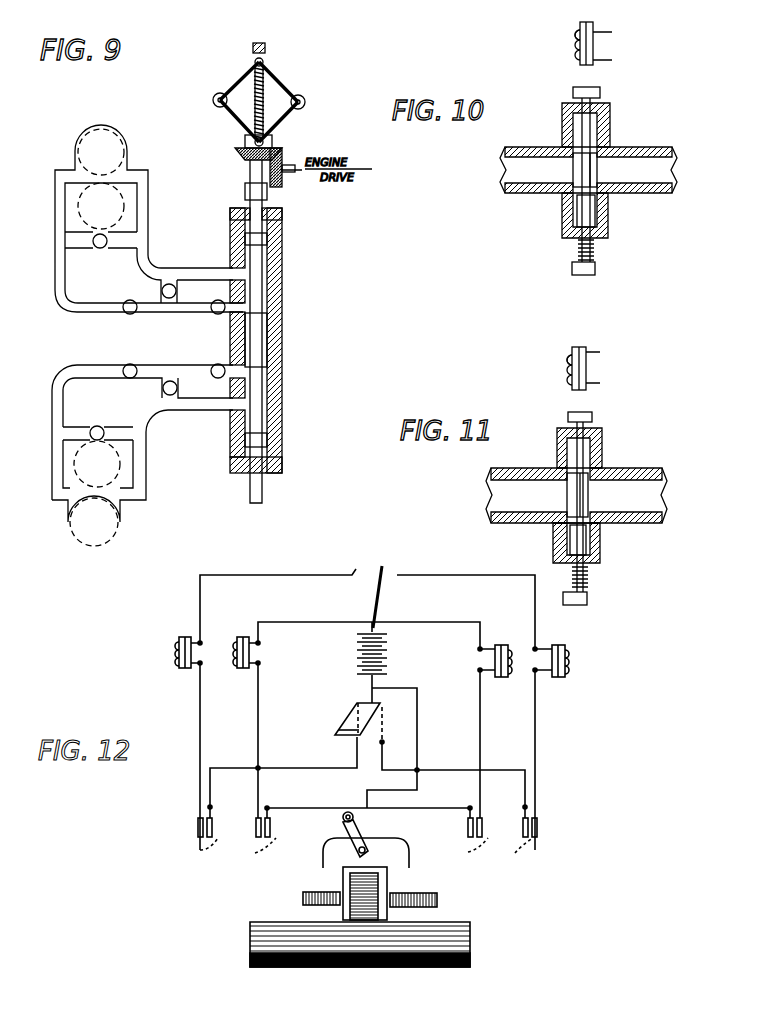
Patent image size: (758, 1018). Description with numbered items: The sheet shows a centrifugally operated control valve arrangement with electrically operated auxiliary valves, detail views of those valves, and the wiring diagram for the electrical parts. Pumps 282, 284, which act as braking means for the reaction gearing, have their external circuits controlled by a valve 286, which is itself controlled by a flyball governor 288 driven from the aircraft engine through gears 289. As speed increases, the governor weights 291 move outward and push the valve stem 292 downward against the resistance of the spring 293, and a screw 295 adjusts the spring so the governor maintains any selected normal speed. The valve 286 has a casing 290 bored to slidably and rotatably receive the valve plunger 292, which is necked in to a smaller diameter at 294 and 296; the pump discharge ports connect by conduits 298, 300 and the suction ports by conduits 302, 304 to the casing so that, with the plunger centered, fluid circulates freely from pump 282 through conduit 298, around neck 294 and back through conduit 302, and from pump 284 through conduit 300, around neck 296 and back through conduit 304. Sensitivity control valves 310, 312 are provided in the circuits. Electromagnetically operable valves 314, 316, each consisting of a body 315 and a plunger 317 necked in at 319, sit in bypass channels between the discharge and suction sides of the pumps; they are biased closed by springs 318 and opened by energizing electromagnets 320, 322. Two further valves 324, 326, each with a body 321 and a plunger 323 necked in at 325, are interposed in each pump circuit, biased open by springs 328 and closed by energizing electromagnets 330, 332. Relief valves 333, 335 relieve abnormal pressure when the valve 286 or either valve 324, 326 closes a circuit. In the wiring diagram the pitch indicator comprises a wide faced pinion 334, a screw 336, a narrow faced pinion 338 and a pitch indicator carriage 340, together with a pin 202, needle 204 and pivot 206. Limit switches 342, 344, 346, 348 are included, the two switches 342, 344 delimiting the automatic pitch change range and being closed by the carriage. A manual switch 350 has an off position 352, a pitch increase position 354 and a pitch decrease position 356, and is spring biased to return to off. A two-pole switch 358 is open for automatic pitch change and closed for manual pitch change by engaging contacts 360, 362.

In FIG. 12, the pin 202 is at (397, 841).
In FIG. 12, the needle 204 is at (351, 829).
In FIG. 12, the pivot 206 is at (355, 820).
In FIG. 9, the pump 282 is at (140, 159).
In FIG. 9, the pump 284 is at (139, 514).
In FIG. 9, the valve 286 is at (304, 331).
In FIG. 9, the flyball governor 288 is at (269, 117).
In FIG. 9, the gears 289 is at (282, 180).
In FIG. 9, the casing 290 is at (266, 358).
In FIG. 9, the governor weights 291 is at (226, 68).
In FIG. 9, the valve plunger 292 is at (266, 318).
In FIG. 9, the spring 293 is at (283, 110).
In FIG. 9, the necked in portion 294 is at (266, 283).
In FIG. 9, the screw 295 is at (267, 48).
In FIG. 9, the necked in portion 296 is at (266, 258).
In FIG. 9, the conduit 298 is at (70, 300).
In FIG. 9, the conduit 300 is at (66, 376).
In FIG. 9, the conduit 302 is at (150, 206).
In FIG. 9, the conduit 304 is at (146, 471).
In FIG. 9, the sensitivity control valve 310 is at (222, 314).
In FIG. 9, the sensitivity control valve 312 is at (218, 364).
In FIG. 9, the electromagnetically operable valve 314 is at (171, 283).
In FIG. 10, the electromagnetically operable valve 314 is at (590, 181).
In FIG. 10, the body 315 is at (610, 212).
In FIG. 9, the electromagnetically operable valve 316 is at (168, 396).
In FIG. 10, the electromagnetically operable valve 316 is at (590, 154).
In FIG. 10, the plunger 317 is at (578, 166).
In FIG. 10, the spring 318 is at (597, 255).
In FIG. 10, the necked in portion 319 is at (578, 200).
In FIG. 10, the electromagnet 320 is at (580, 42).
In FIG. 12, the electromagnet 320 is at (242, 640).
In FIG. 11, the body 321 is at (632, 470).
In FIG. 10, the electromagnet 322 is at (557, 45).
In FIG. 12, the electromagnet 322 is at (494, 678).
In FIG. 11, the plunger 323 is at (570, 538).
In FIG. 9, the electromagnetically operable valve 324 is at (126, 314).
In FIG. 11, the electromagnetically operable valve 324 is at (585, 508).
In FIG. 11, the necked in portion 325 is at (572, 502).
In FIG. 9, the electromagnetically operable valve 326 is at (150, 347).
In FIG. 11, the electromagnetically operable valve 326 is at (618, 544).
In FIG. 11, the spring 328 is at (582, 585).
In FIG. 11, the electromagnet 330 is at (588, 362).
In FIG. 12, the electromagnet 330 is at (182, 640).
In FIG. 11, the electromagnet 332 is at (619, 372).
In FIG. 12, the electromagnet 332 is at (560, 678).
In FIG. 9, the relief valve 333 is at (96, 248).
In FIG. 12, the wide faced pinion 334 is at (285, 967).
In FIG. 9, the relief valve 335 is at (118, 420).
In FIG. 12, the screw 336 is at (303, 898).
In FIG. 12, the narrow faced pinion 338 is at (387, 918).
In FIG. 12, the pitch indicator carriage 340 is at (398, 868).
In FIG. 12, the limit switch 342 is at (268, 808).
In FIG. 12, the limit switch 344 is at (470, 806).
In FIG. 12, the limit switch 346 is at (203, 808).
In FIG. 12, the limit switch 348 is at (524, 806).
In FIG. 12, the manual switch 350 is at (380, 600).
In FIG. 12, the off position 352 is at (375, 566).
In FIG. 12, the pitch increase position 354 is at (397, 575).
In FIG. 12, the pitch decrease position 356 is at (352, 577).
In FIG. 12, the two-pole switch 358 is at (356, 712).
In FIG. 12, the contact 360 is at (353, 742).
In FIG. 12, the contact 362 is at (383, 742).